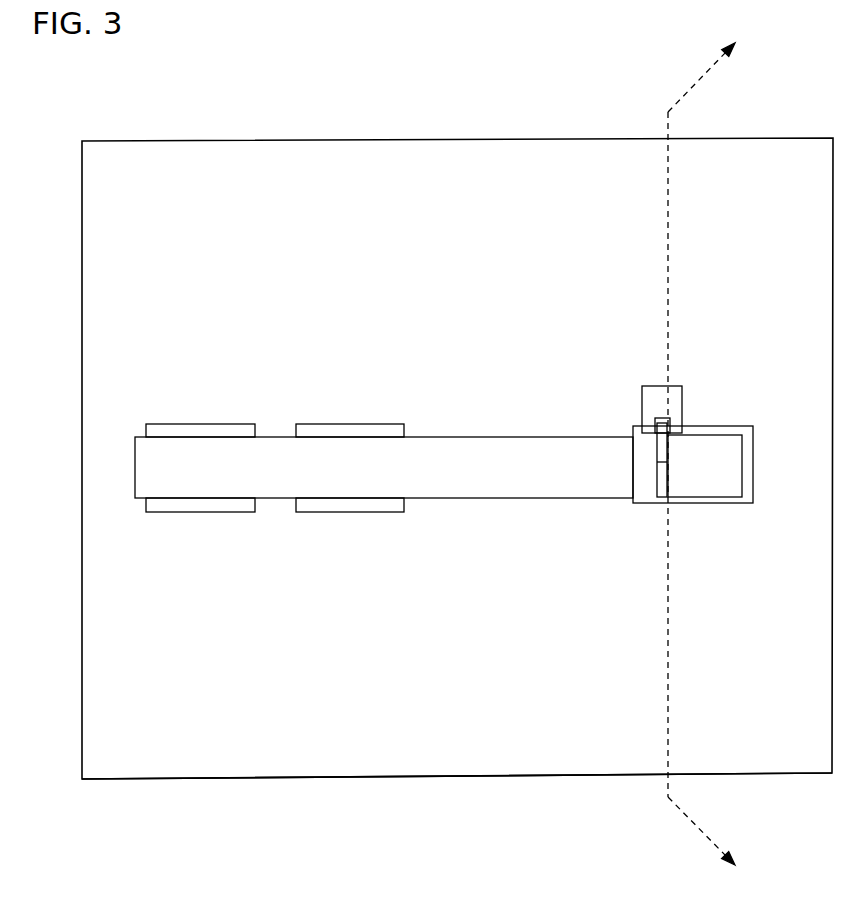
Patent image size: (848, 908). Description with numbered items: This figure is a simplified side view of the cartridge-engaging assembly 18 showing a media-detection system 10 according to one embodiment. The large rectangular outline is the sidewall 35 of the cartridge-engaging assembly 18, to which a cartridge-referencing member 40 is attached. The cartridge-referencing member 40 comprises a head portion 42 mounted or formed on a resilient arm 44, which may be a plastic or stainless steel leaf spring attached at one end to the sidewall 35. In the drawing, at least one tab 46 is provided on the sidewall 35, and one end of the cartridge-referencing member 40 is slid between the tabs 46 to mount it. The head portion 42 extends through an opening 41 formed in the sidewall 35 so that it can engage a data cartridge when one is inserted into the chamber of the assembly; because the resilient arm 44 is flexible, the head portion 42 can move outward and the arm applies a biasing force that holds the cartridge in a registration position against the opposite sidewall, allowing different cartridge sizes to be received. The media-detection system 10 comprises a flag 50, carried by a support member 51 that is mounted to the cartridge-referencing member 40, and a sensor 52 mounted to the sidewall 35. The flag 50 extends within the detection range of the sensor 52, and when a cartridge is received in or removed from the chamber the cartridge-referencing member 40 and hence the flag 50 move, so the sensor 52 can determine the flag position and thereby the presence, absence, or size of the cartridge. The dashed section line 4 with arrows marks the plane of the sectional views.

The section line 4- 4 is at (712, 67).
The media-detection system 10 is at (683, 435).
The cartridge-engaging assembly 18 is at (288, 138).
The sidewall 35 is at (287, 777).
The cartridge-referencing member 40 is at (384, 466).
The opening 41 is at (754, 491).
The head portion 42 is at (722, 434).
The resilient arm 44 is at (498, 499).
The tab 46 is at (371, 424).
The flag 50 is at (655, 452).
The support member 51 is at (655, 481).
The sensor 52 is at (642, 393).